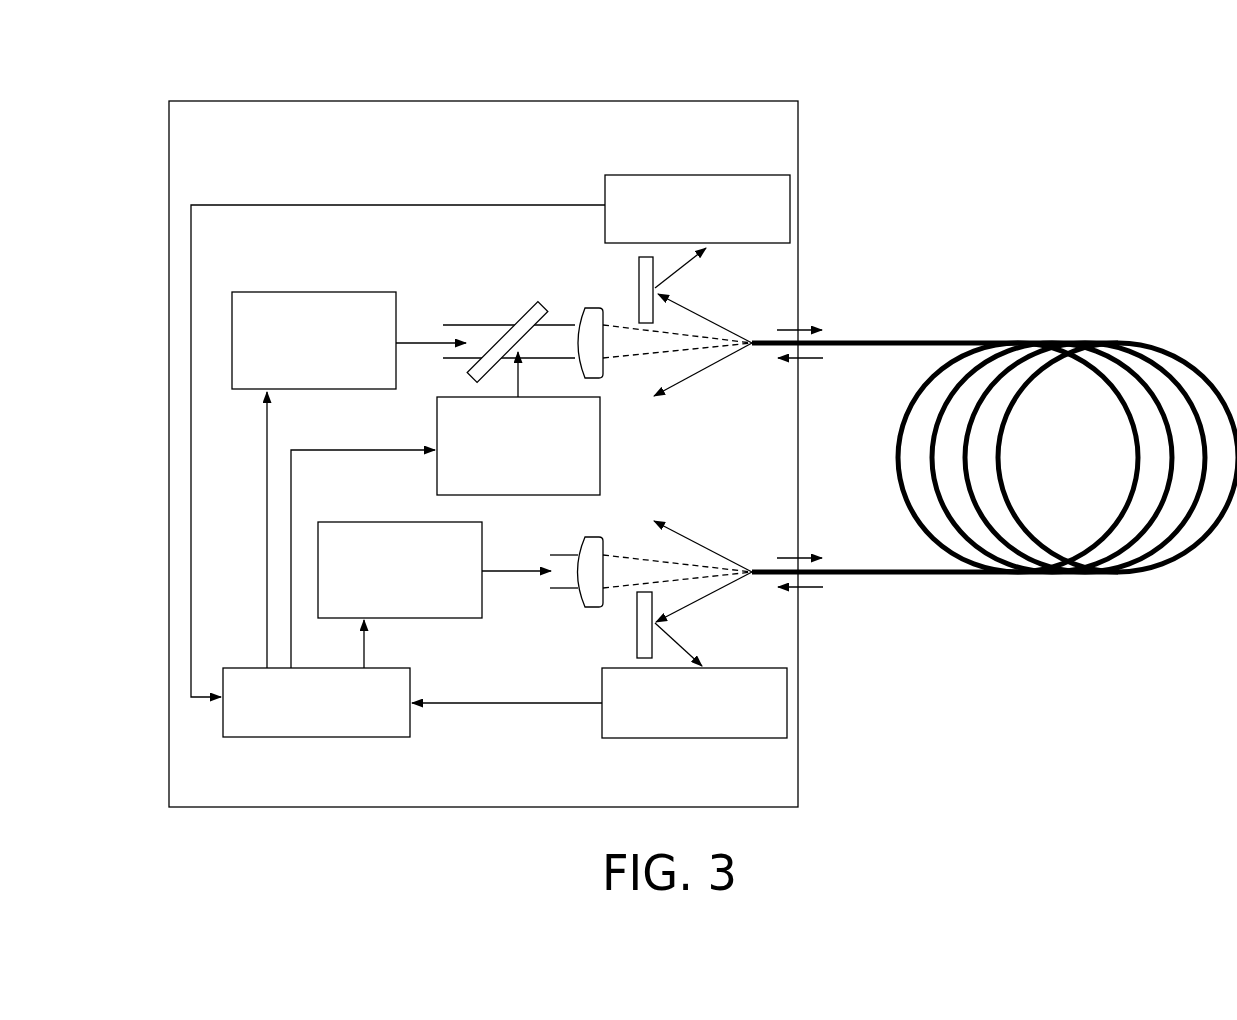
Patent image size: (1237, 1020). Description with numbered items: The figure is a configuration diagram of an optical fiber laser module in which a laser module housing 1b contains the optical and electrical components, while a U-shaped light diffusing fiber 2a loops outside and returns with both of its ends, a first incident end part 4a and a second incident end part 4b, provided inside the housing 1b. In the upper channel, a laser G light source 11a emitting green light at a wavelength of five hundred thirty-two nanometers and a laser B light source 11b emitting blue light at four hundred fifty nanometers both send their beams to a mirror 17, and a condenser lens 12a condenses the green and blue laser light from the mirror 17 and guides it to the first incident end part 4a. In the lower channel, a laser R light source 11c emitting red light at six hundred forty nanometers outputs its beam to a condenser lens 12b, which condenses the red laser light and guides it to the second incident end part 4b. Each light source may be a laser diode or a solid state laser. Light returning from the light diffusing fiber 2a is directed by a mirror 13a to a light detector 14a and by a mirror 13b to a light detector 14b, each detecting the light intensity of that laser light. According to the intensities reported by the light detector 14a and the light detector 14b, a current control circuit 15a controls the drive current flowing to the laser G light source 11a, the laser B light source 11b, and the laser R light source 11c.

The laser module housing 1b is at (305, 100).
The light diffusing fiber 2a is at (913, 340).
The first incident end part 4a is at (752, 340).
The second incident end part 4b is at (752, 568).
The laser G light source 11a is at (345, 292).
The laser B light source 11b is at (600, 455).
The laser R light source 11c is at (465, 618).
The condenser lens 12a is at (586, 307).
The condenser lens 12b is at (586, 537).
The mirror 13a is at (638, 308).
The mirror 13b is at (636, 615).
The light detector 14a is at (673, 170).
The light detector 14b is at (692, 738).
The current control circuit 15a is at (313, 737).
The mirror 17 is at (524, 307).